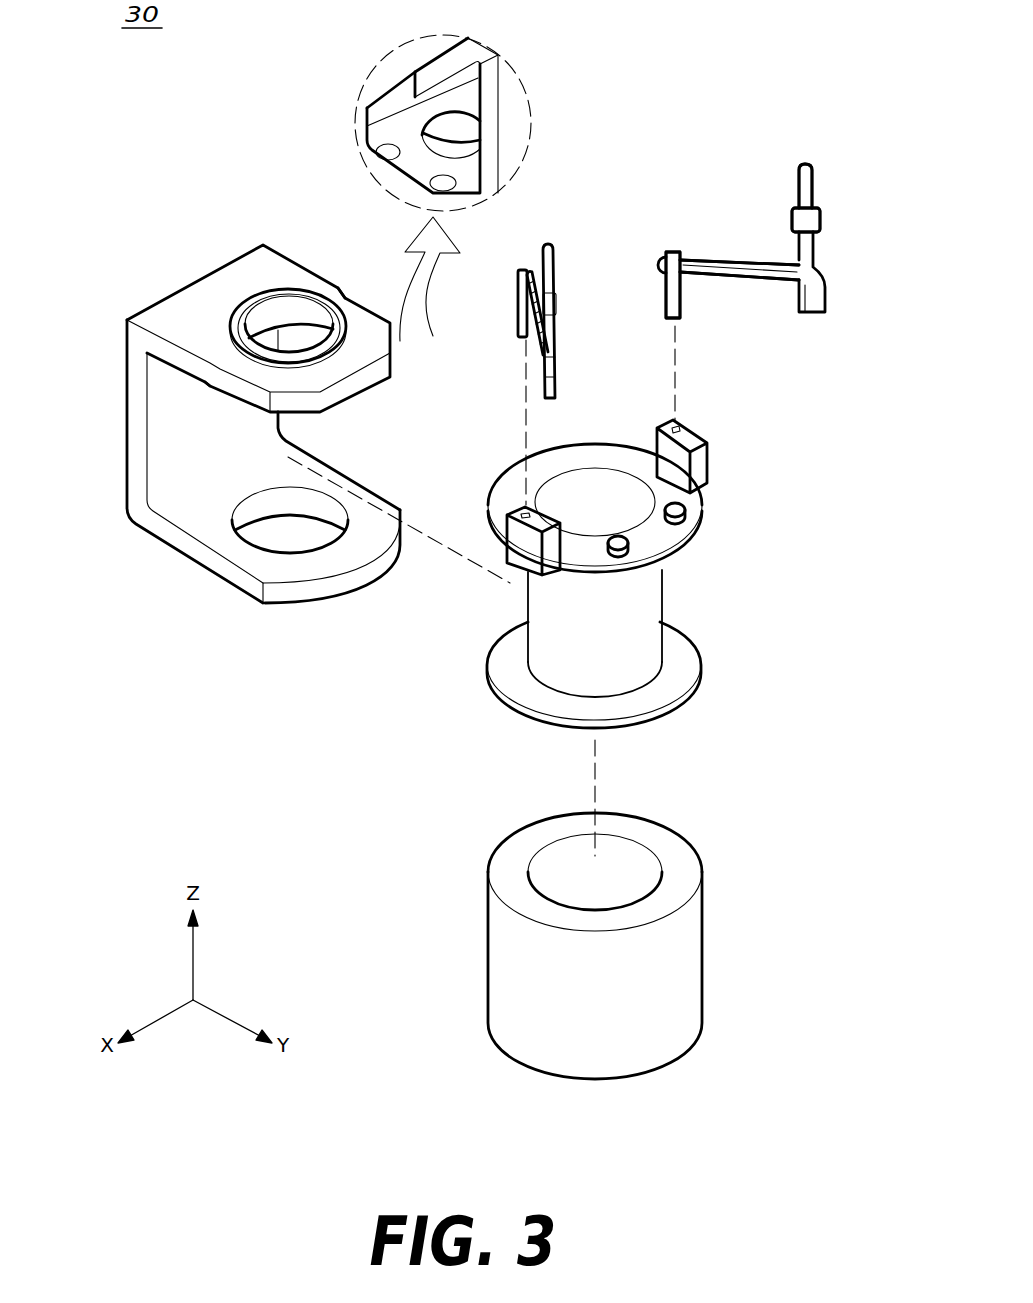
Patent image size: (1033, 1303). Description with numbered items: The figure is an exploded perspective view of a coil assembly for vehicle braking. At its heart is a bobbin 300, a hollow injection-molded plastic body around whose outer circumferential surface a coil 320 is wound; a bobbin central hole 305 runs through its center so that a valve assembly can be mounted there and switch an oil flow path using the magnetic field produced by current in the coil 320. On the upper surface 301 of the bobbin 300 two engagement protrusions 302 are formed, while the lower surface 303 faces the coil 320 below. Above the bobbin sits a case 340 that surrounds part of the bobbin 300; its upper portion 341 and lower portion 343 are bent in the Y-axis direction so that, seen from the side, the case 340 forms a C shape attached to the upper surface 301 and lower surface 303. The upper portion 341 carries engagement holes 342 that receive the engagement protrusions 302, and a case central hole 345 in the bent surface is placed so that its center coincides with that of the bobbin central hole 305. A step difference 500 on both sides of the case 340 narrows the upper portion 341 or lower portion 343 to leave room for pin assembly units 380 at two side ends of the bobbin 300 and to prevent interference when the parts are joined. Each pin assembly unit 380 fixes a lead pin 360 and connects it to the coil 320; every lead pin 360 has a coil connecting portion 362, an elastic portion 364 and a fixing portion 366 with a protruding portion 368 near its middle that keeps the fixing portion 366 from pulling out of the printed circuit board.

The bobbin 300 is at (608, 569).
The upper surface 301 is at (512, 473).
The engagement protrusion 302 is at (628, 548).
The lower surface 303 is at (708, 691).
The bobbin central hole 305 is at (610, 480).
The coil 320 is at (703, 966).
The case 340 is at (312, 444).
The upper portion 341 is at (186, 298).
The engagement hole 342 is at (443, 187).
The lower portion 343 is at (209, 584).
The case central hole 345 is at (290, 546).
The lead pin 360 is at (548, 243).
The coil connecting portion 362 is at (670, 290).
The elastic portion 364 is at (698, 266).
The fixing portion 366 is at (800, 184).
The protruding portion 368 is at (793, 214).
The pin assembly unit 380 is at (507, 564).
The step difference 500 is at (206, 383).